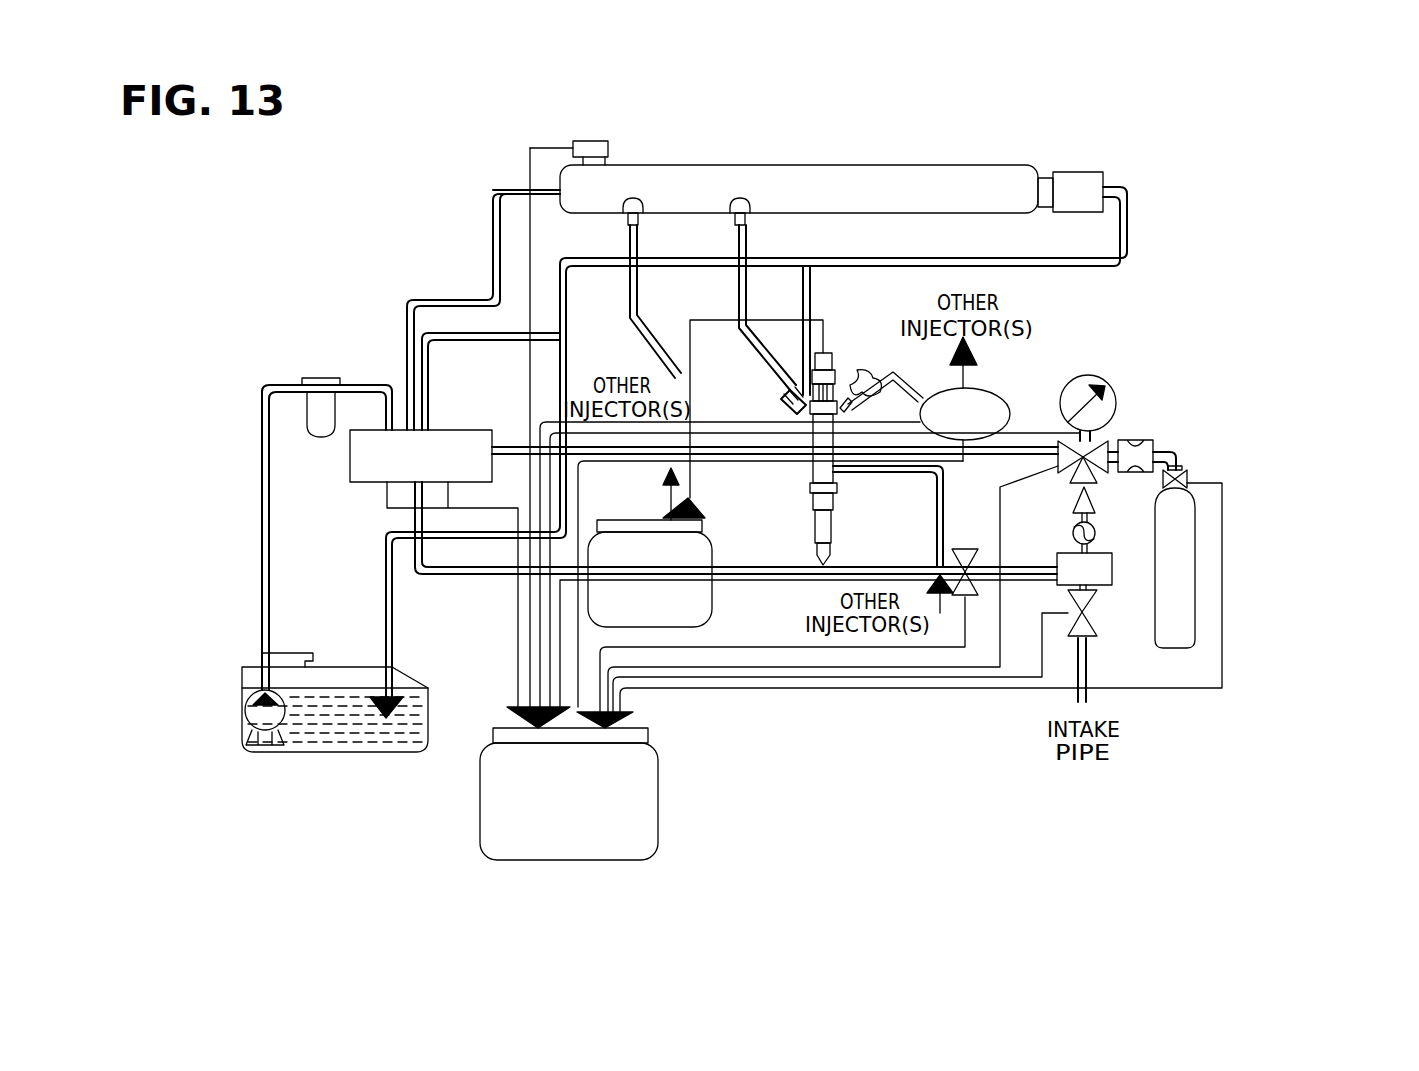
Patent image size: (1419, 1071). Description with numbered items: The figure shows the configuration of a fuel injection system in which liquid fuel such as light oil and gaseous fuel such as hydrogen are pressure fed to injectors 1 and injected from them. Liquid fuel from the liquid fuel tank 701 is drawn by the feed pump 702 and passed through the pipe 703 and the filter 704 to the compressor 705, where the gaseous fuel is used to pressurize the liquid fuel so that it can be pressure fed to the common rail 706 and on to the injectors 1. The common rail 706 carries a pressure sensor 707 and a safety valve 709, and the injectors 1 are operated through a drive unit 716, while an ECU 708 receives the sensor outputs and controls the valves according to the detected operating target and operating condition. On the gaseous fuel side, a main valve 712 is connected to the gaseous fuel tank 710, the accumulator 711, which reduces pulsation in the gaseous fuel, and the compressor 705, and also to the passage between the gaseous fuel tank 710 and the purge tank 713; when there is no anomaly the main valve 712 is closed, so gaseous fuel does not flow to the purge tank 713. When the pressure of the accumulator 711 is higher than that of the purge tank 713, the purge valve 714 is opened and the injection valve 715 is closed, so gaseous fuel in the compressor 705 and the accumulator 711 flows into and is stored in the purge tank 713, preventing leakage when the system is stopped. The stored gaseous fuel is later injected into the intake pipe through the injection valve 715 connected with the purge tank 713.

The injector 1 is at (840, 355).
The liquid fuel tank 701 is at (325, 735).
The feed pump 702 is at (253, 710).
The pipe 703 is at (262, 530).
The filter 704 is at (325, 395).
The compressor 705 is at (378, 430).
The common rail 706 is at (728, 185).
The pressure sensor 707 is at (583, 140).
The ECU 708 is at (660, 795).
The safety valve 709 is at (1073, 172).
The gaseous fuel tank 710 is at (1180, 548).
The accumulator 711 is at (1005, 395).
The main valve 712 is at (1095, 450).
The purge tank 713 is at (1112, 568).
The purge valve 714 is at (978, 600).
The injection valve 715 is at (1100, 625).
The drive unit 716 is at (712, 556).